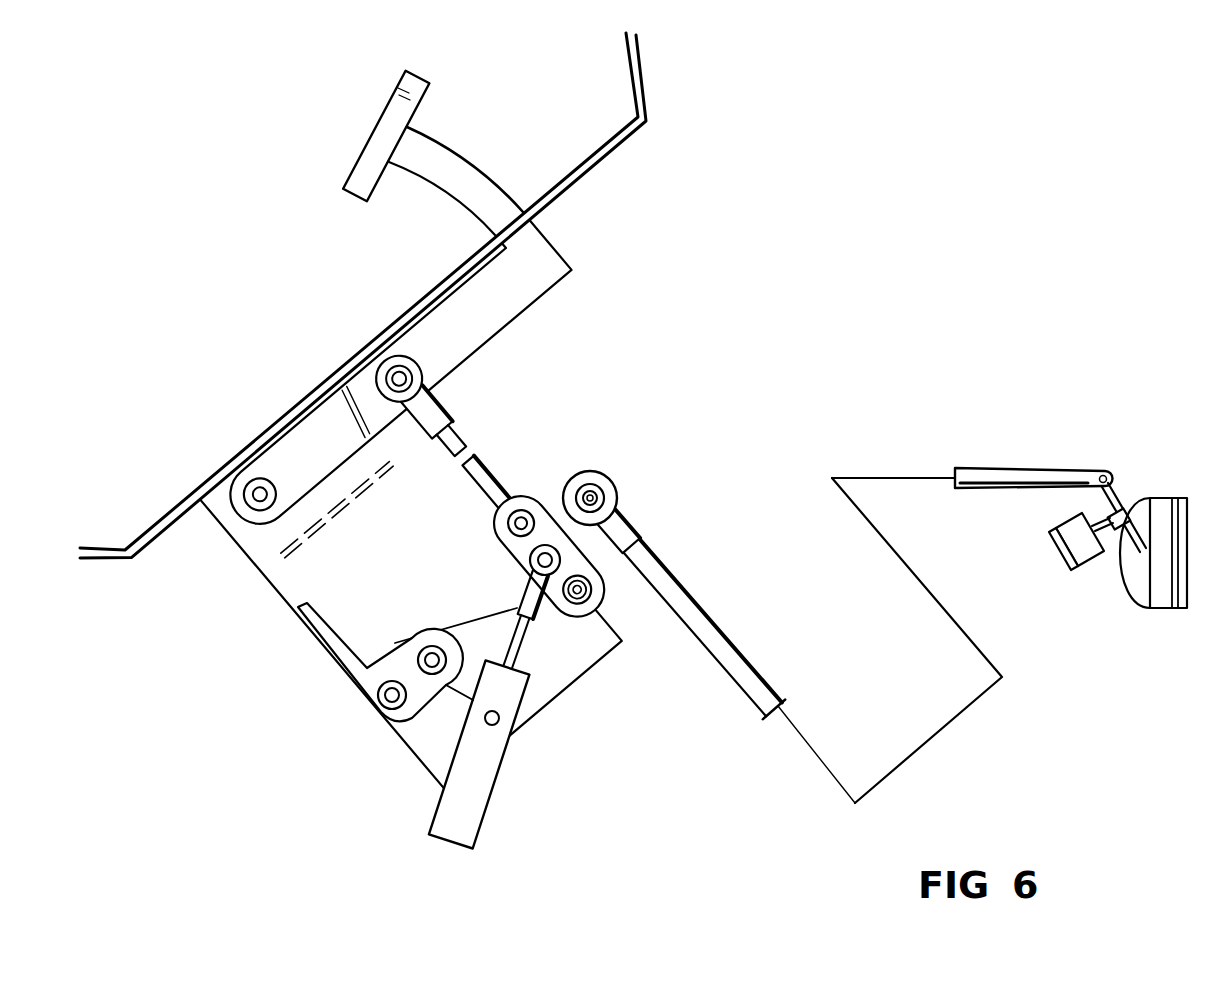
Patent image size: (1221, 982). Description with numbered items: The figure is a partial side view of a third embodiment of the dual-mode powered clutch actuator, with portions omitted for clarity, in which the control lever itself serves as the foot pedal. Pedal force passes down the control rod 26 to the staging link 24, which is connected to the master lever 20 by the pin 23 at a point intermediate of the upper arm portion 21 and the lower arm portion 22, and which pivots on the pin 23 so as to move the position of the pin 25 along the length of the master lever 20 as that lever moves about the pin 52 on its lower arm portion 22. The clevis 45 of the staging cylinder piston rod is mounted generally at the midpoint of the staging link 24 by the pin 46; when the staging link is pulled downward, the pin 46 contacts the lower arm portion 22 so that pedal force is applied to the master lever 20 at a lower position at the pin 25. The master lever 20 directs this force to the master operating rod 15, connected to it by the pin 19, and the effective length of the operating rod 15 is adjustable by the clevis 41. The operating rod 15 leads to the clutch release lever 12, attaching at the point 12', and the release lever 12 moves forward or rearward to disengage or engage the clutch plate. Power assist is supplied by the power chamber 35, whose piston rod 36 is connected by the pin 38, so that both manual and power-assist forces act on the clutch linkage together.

The control rod 26 is at (458, 446).
The staging link 24 is at (529, 497).
The pin 25 is at (507, 522).
The upper arm portion 21 is at (600, 560).
The pin 23 is at (596, 598).
The master lever 20 is at (590, 474).
The pin 19 is at (592, 498).
The clevis 41 is at (626, 541).
The master operating rod 15 is at (688, 595).
The pin 46 is at (530, 564).
The clevis 45 is at (527, 586).
The lower arm portion 22 is at (463, 636).
The pin 52 is at (420, 652).
The point 12' is at (1060, 472).
The clutch release lever 12 is at (1103, 517).
The piston rod 36 is at (1096, 529).
The power chamber 35 is at (1076, 568).
The pin 38 is at (1125, 550).